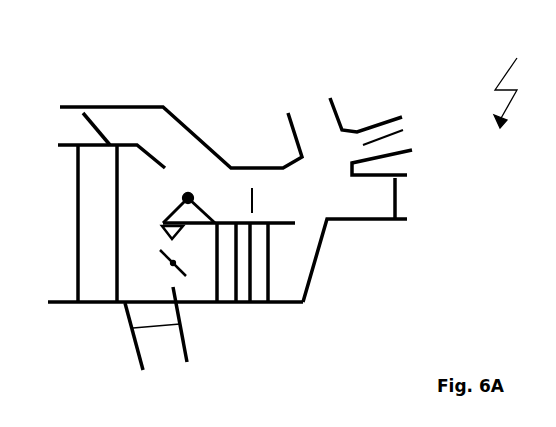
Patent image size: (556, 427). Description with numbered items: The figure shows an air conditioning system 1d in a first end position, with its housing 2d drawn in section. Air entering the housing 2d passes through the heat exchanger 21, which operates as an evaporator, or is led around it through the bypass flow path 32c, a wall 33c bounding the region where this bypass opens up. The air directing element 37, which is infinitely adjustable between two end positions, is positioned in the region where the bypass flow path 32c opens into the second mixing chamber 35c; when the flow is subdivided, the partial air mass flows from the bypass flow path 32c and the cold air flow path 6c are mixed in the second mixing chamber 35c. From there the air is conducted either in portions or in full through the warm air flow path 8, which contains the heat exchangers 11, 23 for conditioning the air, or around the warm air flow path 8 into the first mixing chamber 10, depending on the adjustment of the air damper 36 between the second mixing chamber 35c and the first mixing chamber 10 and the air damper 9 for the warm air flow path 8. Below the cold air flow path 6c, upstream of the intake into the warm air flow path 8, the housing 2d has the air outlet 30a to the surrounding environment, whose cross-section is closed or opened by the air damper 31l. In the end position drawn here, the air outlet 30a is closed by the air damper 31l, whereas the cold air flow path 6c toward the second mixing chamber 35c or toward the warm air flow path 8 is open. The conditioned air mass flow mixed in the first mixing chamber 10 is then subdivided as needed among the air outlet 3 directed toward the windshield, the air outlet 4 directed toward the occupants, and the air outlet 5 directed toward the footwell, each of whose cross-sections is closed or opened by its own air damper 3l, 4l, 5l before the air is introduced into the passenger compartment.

The air conditioning system 1d is at (519, 80).
The housing 2d is at (298, 157).
The air outlet 3 is at (312, 120).
The air damper 3l is at (297, 122).
The air outlet 4 is at (358, 155).
The air damper 4l is at (382, 138).
The air outlet 5 is at (381, 205).
The air damper 5l is at (395, 197).
The cold air flow path 6c is at (148, 239).
The warm air flow path 8 is at (295, 266).
The air damper 9 is at (180, 288).
The first mixing chamber 10 is at (327, 198).
The heat exchanger 11 is at (227, 278).
The heat exchanger 21 is at (58, 268).
The heat exchanger 23 is at (258, 278).
The air outlet 30a is at (170, 321).
The air damper 31l is at (155, 330).
The bypass flow path 32c is at (157, 137).
The inclined wall 33c is at (98, 127).
The second mixing chamber 35c is at (228, 187).
The air damper 36 is at (252, 193).
The air directing element 37 is at (188, 198).